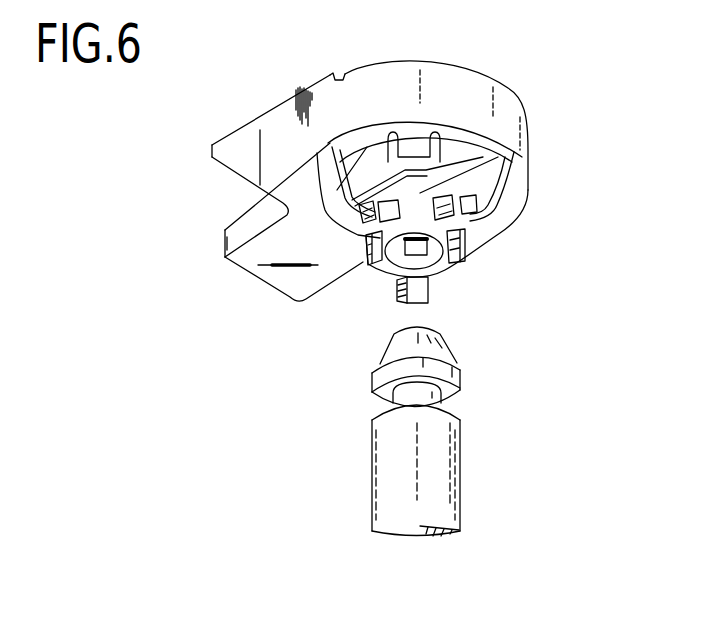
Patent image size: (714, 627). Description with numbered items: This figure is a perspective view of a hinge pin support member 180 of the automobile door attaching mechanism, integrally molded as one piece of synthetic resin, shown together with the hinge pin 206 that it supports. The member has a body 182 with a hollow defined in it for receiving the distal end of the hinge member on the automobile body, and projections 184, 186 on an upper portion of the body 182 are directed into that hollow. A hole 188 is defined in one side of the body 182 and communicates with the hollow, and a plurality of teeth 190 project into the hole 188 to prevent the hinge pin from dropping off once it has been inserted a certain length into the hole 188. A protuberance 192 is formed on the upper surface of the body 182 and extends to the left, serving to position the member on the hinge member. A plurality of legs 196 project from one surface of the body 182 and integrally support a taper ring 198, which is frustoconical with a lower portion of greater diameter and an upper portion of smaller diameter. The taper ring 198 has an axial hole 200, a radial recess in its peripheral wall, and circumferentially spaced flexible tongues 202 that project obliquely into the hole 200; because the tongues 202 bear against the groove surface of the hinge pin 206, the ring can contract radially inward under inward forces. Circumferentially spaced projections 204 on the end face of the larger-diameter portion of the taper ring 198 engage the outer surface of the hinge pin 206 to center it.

The hinge pin support member 180 is at (507, 392).
The body 182 is at (476, 96).
The projection 184 is at (243, 161).
The projection 186 is at (367, 110).
The hole 188 is at (458, 157).
The teeth 190 is at (413, 150).
The protuberance 192 is at (278, 285).
The legs 196 is at (337, 190).
The taper ring 198 is at (450, 279).
The axial hole 200 is at (460, 270).
The flexible tongues 202 is at (417, 233).
The projections 204 is at (344, 291).
The hinge pin 206 is at (437, 484).